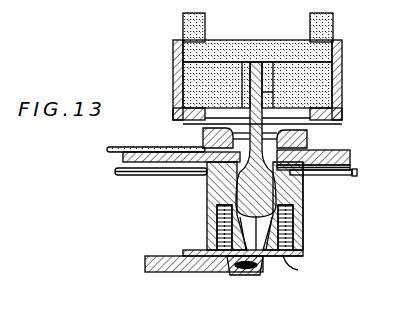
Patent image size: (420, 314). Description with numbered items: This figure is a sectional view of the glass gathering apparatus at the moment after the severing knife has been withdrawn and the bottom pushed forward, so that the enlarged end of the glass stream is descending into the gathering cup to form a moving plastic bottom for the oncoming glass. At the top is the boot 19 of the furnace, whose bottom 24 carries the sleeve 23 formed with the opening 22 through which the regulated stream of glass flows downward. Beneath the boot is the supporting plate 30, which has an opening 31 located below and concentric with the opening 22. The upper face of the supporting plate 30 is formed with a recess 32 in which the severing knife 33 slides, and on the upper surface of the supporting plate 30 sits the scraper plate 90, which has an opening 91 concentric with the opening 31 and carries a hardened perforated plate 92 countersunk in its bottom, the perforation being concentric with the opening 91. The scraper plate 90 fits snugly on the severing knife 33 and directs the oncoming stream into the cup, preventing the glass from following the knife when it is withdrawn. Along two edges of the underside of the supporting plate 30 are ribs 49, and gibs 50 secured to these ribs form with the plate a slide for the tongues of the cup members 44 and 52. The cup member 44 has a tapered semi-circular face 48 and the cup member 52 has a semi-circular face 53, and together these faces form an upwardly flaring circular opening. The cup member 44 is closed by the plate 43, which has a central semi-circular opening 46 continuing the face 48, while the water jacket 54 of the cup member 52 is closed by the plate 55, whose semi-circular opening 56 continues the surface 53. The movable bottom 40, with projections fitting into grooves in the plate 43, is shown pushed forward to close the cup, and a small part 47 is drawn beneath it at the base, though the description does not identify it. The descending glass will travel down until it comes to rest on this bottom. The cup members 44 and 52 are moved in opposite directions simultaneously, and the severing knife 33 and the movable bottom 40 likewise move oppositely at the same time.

The boot 19 is at (183, 22).
The bottom of the boot 24 is at (185, 70).
The sleeve 23 is at (268, 74).
The opening 22 is at (262, 91).
The opening 91 is at (320, 126).
The perforated plate 92 is at (203, 145).
The scraper plate 90 is at (204, 139).
The recess 32 is at (290, 146).
The severing knife 33 is at (127, 147).
The tapered semi-circular face 48 is at (232, 168).
The opening 31 is at (165, 165).
The supporting plate 30 is at (335, 150).
The ribs 49 is at (350, 166).
The gibs 50 is at (358, 172).
The cup member 44 is at (208, 199).
The central semi-circular opening 46 is at (217, 216).
The semi-circular face 53 is at (304, 188).
The water jacket 54 is at (295, 212).
The cup member 52 is at (303, 228).
The plate 43 is at (189, 250).
The plate 55 is at (303, 253).
The semi-circular opening 56 is at (301, 269).
The movable bottom 40 is at (212, 273).
The base insert 47 is at (228, 276).